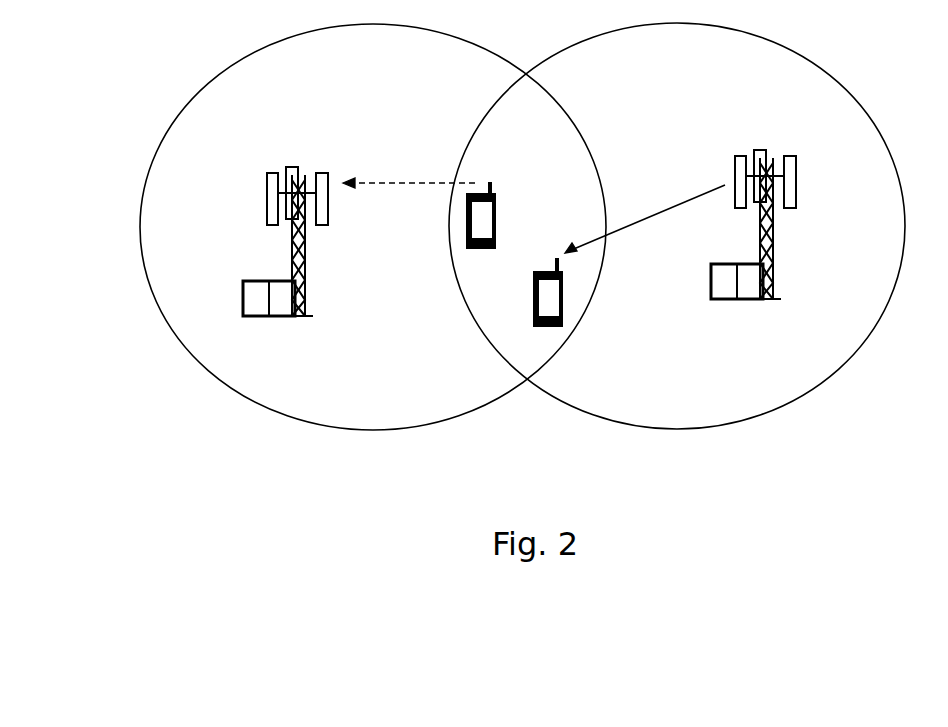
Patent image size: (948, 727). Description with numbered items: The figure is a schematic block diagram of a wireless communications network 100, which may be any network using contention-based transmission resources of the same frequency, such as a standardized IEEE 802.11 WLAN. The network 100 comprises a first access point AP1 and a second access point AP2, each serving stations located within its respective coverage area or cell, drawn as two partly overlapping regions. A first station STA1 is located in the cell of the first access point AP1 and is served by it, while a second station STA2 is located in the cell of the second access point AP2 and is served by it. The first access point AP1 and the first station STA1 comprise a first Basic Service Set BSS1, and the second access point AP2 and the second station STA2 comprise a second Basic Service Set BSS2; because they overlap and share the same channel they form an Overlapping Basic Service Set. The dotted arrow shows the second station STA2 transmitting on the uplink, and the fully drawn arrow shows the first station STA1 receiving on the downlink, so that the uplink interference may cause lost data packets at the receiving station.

The wireless communications network 100 is at (788, 465).
The first Basic Service Set BSS1 is at (865, 337).
The second Basic Service Set BSS2 is at (160, 313).
The first access point AP1 is at (773, 250).
The second access point AP2 is at (306, 298).
The first station STA1 is at (563, 279).
The second station STA2 is at (467, 232).